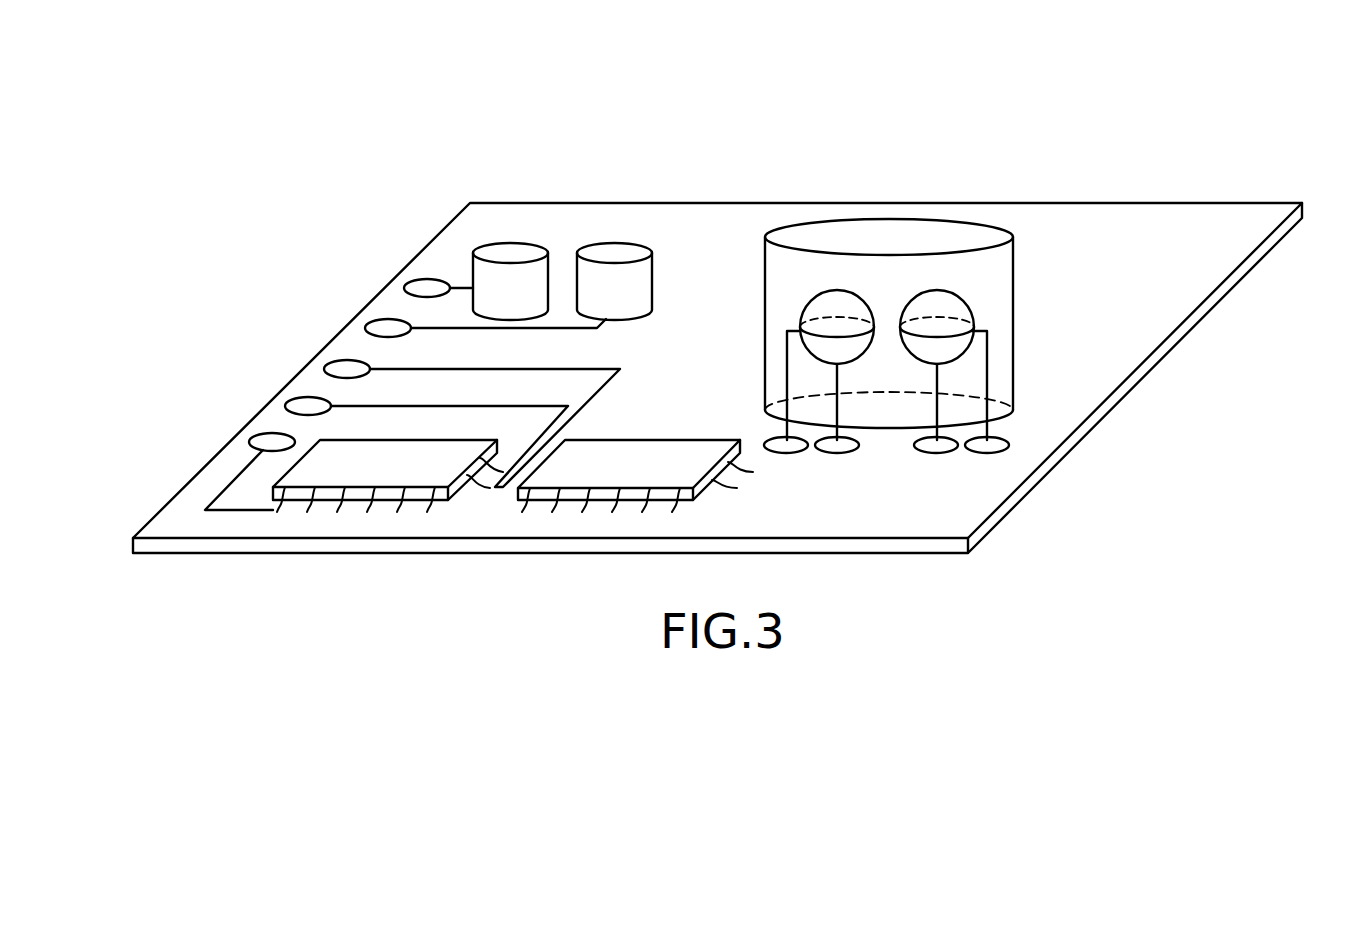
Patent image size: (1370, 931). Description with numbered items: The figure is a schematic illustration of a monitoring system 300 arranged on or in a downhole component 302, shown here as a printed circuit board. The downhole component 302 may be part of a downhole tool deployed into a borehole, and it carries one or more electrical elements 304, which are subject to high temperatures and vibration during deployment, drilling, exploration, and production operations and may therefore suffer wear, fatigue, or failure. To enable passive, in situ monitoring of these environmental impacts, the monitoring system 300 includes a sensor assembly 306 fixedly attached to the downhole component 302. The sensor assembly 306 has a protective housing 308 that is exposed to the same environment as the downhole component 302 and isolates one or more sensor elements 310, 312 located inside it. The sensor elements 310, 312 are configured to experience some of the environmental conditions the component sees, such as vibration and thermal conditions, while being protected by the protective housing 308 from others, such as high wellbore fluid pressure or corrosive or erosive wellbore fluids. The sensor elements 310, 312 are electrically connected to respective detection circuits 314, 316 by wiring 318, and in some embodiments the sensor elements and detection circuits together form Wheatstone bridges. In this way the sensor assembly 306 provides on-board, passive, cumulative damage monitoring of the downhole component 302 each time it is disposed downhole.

The monitoring system 300 is at (1093, 146).
The downhole component 302 is at (338, 340).
The electrical elements 304 is at (572, 237).
The sensor assembly 306 is at (910, 218).
The protective housing 308 is at (1015, 262).
The sensor element 310 is at (953, 310).
The sensor element 312 is at (820, 313).
The detection circuit 314 is at (972, 465).
The detection circuit 316 is at (820, 462).
The wiring 318 is at (783, 370).